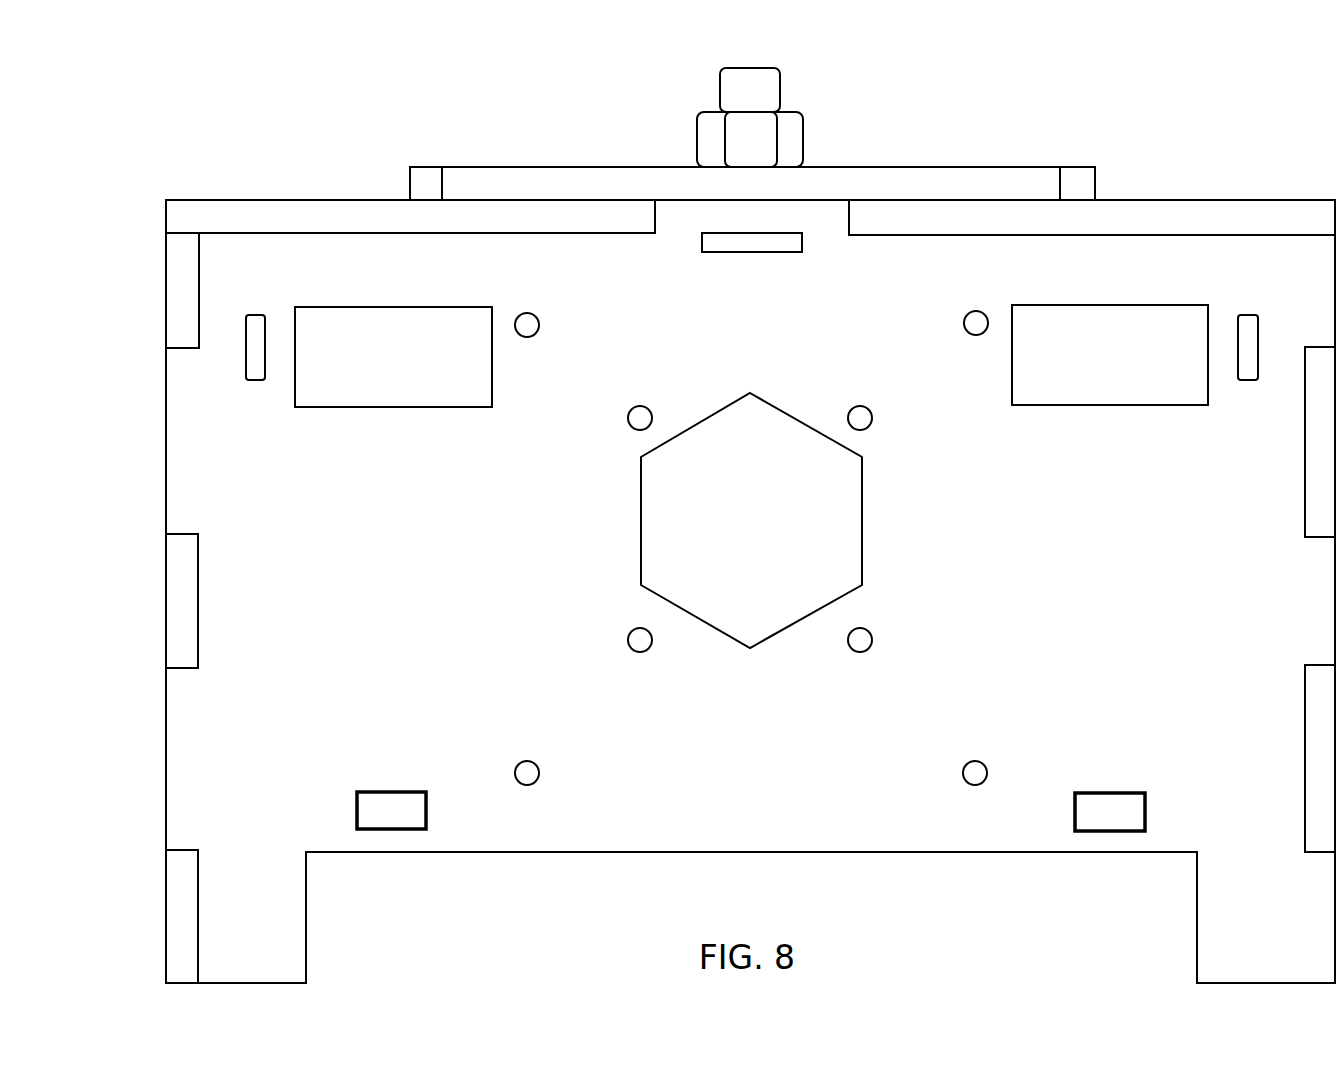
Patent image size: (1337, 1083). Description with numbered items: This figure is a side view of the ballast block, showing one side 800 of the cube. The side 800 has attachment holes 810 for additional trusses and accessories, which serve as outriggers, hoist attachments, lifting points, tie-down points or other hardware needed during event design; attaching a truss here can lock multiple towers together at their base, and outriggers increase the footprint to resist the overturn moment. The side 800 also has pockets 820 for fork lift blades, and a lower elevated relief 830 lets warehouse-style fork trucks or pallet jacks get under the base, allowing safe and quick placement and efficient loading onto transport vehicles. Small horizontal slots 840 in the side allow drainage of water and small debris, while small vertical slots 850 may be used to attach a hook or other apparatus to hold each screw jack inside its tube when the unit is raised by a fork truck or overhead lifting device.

The side 800 is at (612, 258).
The attachment holes 810 is at (965, 326).
The pockets 820 is at (389, 407).
The lower elevated relief 830 is at (853, 518).
The small horizontal slots 840 is at (387, 792).
The small vertical slots 850 is at (260, 390).